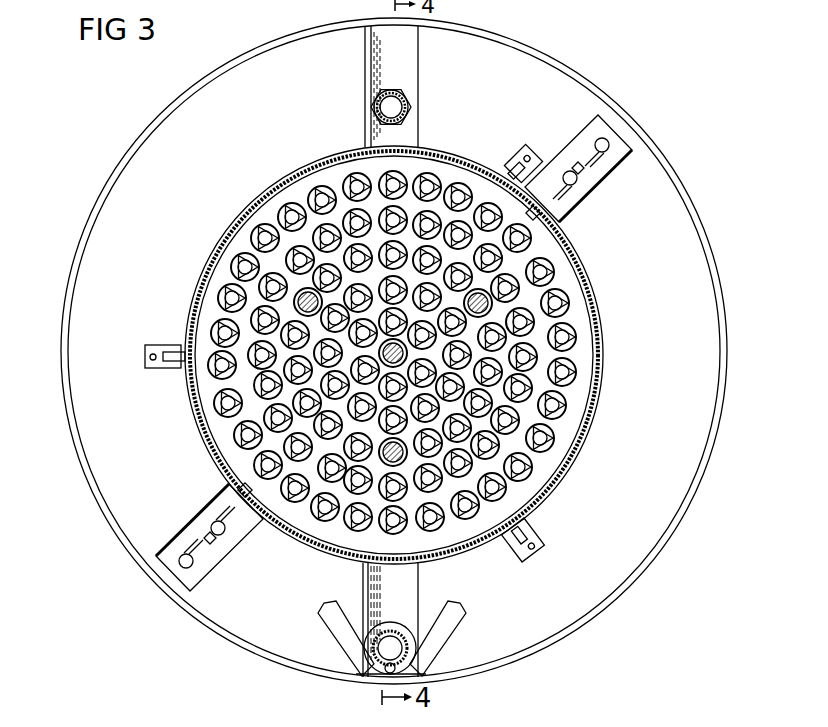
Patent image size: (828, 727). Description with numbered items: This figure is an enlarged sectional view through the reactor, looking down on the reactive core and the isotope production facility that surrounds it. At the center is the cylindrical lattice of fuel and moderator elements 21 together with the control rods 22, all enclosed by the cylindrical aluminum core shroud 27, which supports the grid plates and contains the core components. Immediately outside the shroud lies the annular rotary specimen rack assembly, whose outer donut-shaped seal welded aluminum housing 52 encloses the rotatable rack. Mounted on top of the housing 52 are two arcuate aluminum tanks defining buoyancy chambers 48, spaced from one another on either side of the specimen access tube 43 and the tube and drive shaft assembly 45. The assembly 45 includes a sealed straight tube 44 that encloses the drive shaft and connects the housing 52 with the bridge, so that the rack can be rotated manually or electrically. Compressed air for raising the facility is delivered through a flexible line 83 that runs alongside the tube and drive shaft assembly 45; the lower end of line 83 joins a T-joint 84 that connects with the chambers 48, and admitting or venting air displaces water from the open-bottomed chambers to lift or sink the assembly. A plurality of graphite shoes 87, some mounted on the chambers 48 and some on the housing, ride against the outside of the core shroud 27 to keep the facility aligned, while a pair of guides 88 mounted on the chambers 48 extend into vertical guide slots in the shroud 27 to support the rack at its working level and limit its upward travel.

The fuel and moderator elements 21 is at (488, 340).
The control rods 22 is at (305, 291).
The core shroud 27 is at (582, 278).
The specimen access tube 43 is at (408, 102).
The sealed straight tube 44 is at (414, 633).
The tube and drive shaft assembly 45 is at (381, 612).
The buoyancy chambers 48 is at (72, 416).
The housing 52 is at (441, 18).
The flexible line 83 is at (432, 668).
The T-joint 84 is at (370, 671).
The graphite shoes 87 is at (538, 150).
The guides 88 is at (562, 214).